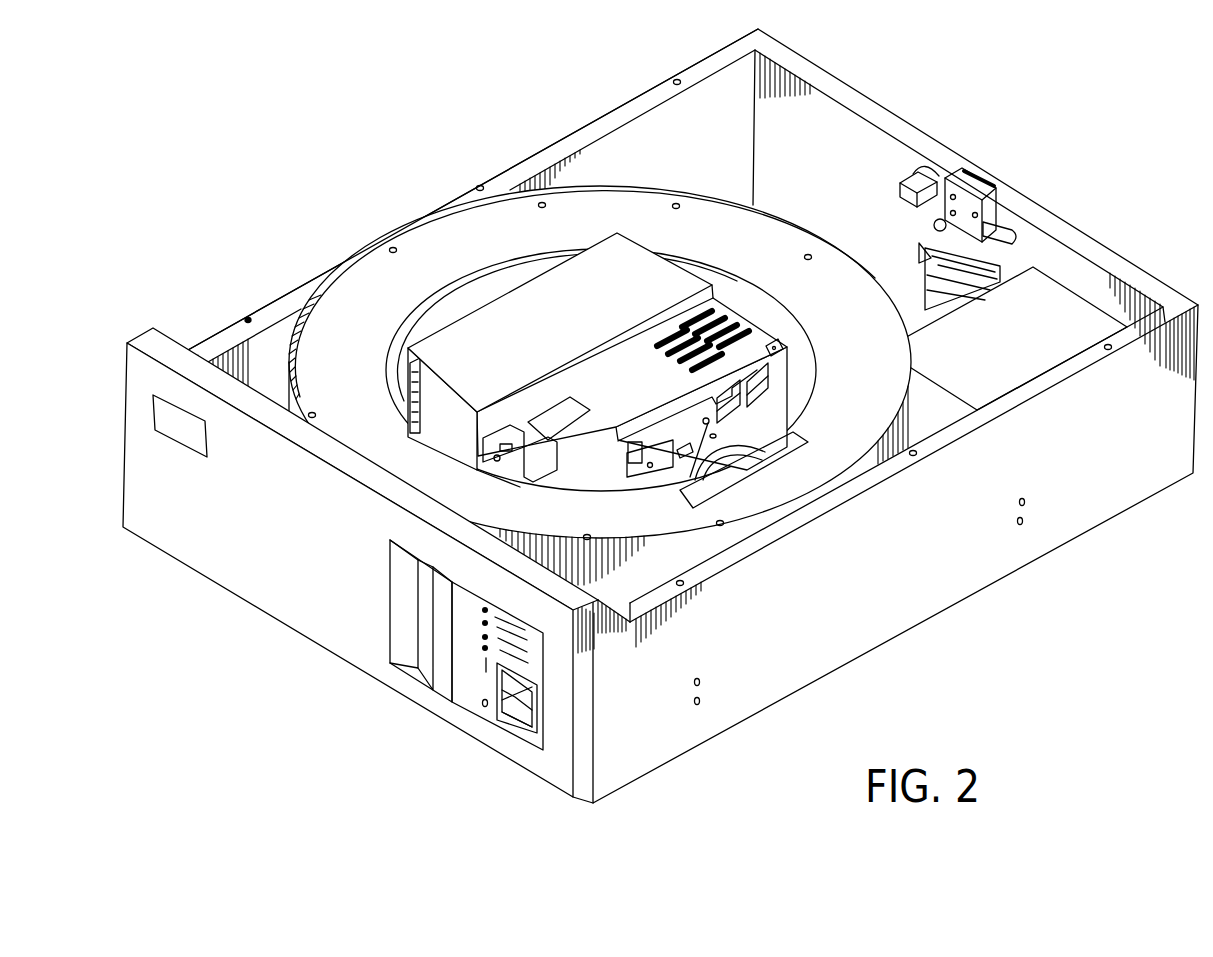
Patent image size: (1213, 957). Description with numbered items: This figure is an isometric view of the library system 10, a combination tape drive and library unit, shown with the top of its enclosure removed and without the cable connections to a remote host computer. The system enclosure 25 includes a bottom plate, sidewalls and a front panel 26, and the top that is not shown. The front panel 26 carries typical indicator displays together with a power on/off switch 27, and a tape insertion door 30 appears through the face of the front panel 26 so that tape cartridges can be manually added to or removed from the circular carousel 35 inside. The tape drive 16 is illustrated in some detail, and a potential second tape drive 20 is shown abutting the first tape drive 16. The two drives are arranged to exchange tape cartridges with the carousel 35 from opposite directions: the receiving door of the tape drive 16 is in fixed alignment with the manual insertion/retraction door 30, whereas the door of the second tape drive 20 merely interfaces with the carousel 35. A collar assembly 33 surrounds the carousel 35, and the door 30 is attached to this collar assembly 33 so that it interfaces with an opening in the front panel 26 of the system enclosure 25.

The library system 10 is at (920, 74).
The tape drive 16 is at (628, 393).
The second tape drive 20 is at (562, 337).
The system enclosure 25 is at (940, 587).
The front panel 26 is at (250, 562).
The power on/off switch 27 is at (513, 727).
The tape insertion door 30 is at (438, 627).
The collar assembly 33 is at (268, 316).
The circular carousel 35 is at (437, 250).